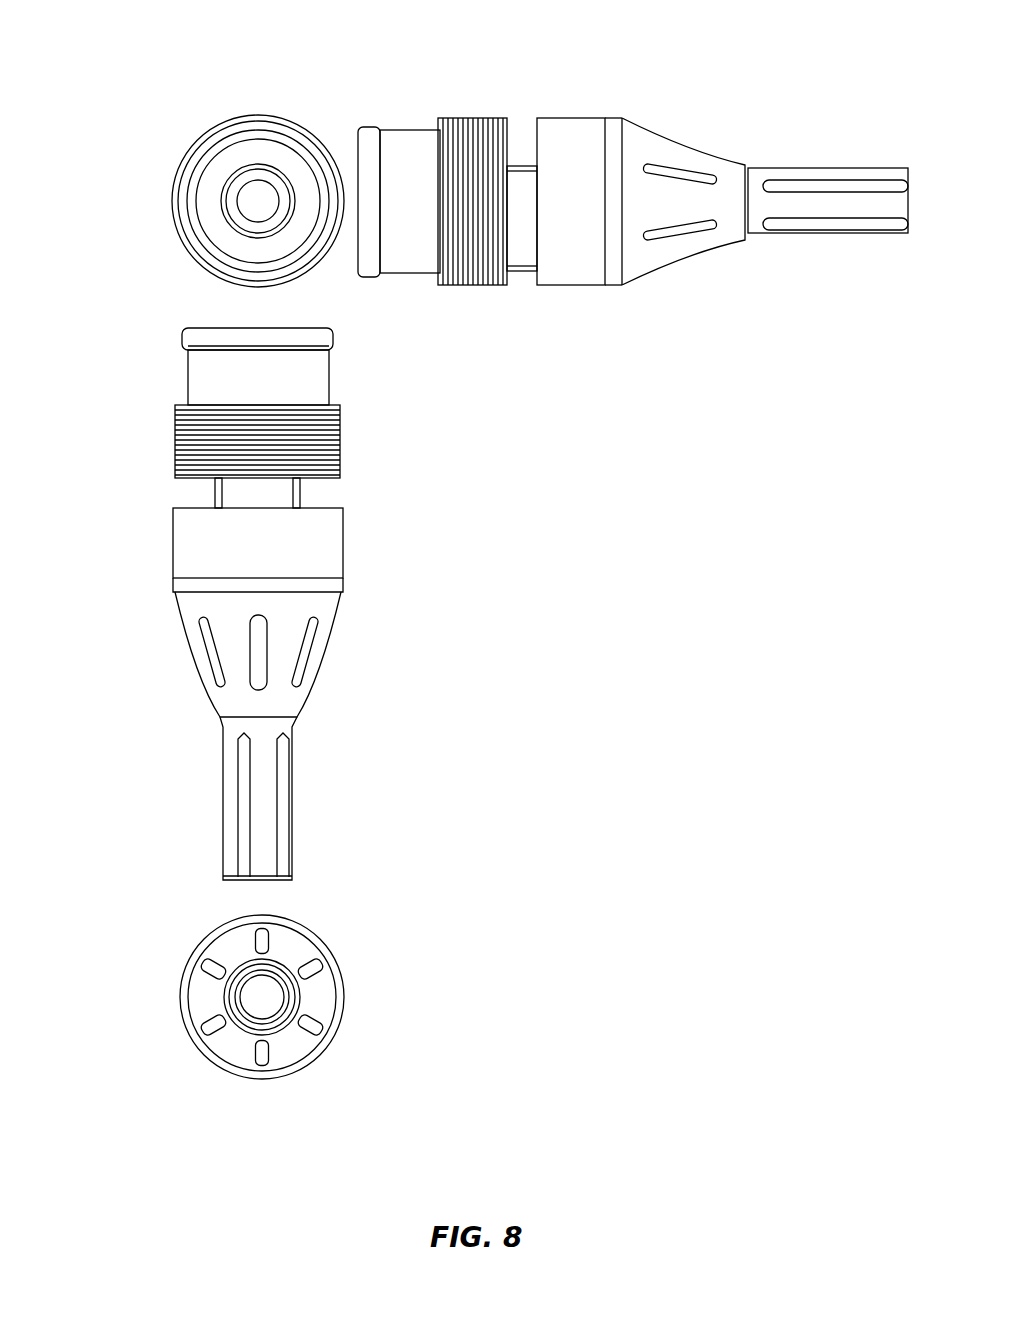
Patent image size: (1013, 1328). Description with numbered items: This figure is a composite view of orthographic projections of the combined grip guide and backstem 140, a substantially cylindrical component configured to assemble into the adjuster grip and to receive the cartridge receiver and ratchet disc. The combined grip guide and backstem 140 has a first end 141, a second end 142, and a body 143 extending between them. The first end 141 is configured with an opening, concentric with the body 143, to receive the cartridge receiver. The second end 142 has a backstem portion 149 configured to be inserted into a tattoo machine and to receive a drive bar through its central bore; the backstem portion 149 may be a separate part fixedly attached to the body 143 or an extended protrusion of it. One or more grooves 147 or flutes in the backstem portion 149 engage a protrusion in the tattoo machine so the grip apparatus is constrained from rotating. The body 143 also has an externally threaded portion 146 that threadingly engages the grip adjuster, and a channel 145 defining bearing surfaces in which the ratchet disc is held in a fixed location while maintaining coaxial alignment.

The combined grip guide and backstem 140 is at (86, 31).
The first end 141 is at (247, 151).
The second end 142 is at (292, 880).
The body 143 is at (190, 555).
The channel 145 is at (537, 110).
The externally threaded portion 146 is at (340, 402).
The groove 147 is at (850, 231).
The backstem portion 149 is at (205, 712).